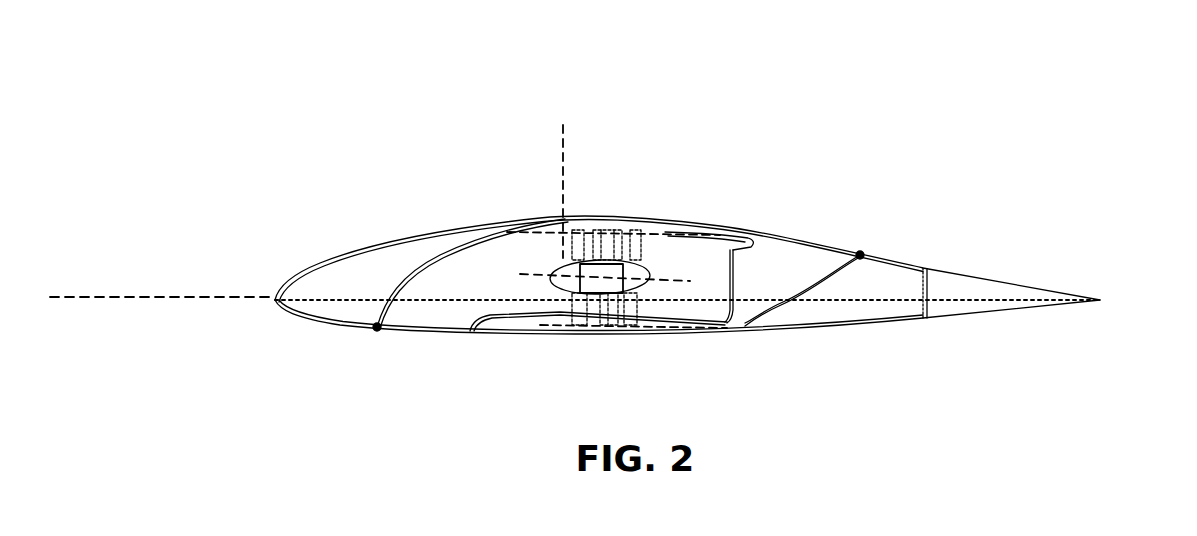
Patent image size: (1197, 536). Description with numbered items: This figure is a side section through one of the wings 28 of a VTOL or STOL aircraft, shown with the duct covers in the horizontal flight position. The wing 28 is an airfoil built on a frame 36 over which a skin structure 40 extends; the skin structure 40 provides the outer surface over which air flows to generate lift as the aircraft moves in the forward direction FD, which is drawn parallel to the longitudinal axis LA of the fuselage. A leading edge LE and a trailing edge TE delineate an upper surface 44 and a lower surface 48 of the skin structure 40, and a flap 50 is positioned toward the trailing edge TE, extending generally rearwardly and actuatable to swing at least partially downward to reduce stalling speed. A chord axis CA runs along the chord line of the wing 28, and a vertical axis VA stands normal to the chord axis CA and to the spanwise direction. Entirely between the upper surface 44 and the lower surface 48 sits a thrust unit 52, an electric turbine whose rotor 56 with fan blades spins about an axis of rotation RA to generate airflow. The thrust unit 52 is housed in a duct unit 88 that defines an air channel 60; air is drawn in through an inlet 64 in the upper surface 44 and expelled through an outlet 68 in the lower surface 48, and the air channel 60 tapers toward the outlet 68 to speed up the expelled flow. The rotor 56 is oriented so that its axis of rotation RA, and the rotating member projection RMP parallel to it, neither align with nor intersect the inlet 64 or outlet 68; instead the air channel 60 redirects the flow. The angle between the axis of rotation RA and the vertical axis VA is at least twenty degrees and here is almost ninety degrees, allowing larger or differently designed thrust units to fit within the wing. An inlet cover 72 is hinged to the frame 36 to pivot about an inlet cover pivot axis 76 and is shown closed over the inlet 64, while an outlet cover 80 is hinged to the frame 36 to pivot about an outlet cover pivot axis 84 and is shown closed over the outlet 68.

The wing 28 is at (390, 100).
The skin structure 40 is at (355, 246).
The frame 36 is at (408, 250).
The upper surface 44 is at (436, 228).
The air channel 60 is at (497, 280).
The rotor 56 is at (603, 264).
The thrust unit 52 is at (630, 277).
The inlet 64 is at (789, 247).
The inlet cover 72 is at (819, 242).
The inlet cover pivot axis 76 is at (860, 255).
The flap 50 is at (990, 297).
The lower surface 48 is at (332, 330).
The outlet cover pivot axis 84 is at (377, 327).
The outlet 68 is at (422, 328).
The outlet cover 80 is at (448, 333).
The duct unit 88 is at (783, 308).
The rotating member projection RMP is at (735, 293).
The axis of rotation RA is at (660, 280).
The vertical axis VA is at (568, 126).
The chord axis CA is at (960, 300).
The longitudinal axis LA is at (126, 297).
The leading edge LE is at (270, 302).
The trailing edge TE is at (1102, 302).
The forward direction FD is at (53, 250).